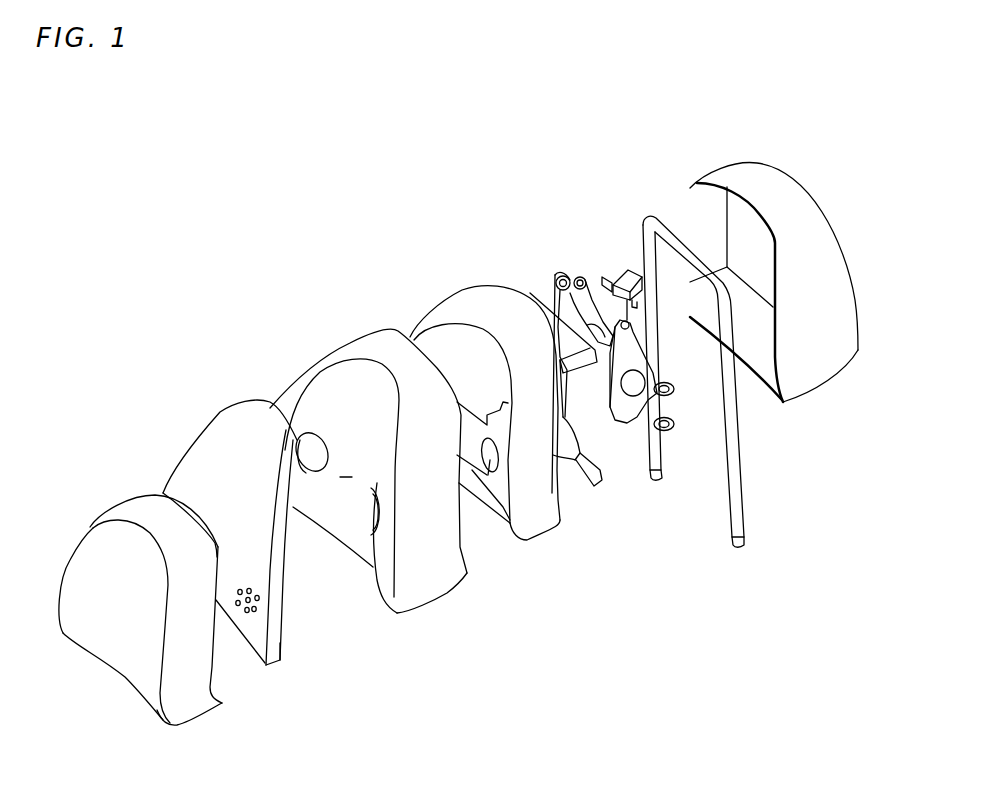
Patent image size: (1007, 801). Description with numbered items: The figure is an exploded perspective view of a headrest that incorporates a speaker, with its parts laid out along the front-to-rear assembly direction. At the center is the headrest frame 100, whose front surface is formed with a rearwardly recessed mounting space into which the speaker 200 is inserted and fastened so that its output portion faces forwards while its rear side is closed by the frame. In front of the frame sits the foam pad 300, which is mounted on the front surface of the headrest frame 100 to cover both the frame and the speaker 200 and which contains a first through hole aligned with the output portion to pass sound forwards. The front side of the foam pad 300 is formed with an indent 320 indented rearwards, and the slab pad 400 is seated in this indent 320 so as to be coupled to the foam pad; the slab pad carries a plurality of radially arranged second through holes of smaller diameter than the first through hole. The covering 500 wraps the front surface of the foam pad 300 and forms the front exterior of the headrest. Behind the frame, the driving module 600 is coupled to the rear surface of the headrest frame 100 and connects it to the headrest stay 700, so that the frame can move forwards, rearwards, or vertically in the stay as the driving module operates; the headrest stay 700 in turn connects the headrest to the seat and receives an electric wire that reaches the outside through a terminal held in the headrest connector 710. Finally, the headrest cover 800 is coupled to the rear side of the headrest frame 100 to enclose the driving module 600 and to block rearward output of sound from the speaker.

The headrest frame 100 is at (462, 302).
The speaker 200 is at (487, 470).
The foam pad 300 is at (327, 336).
The indent 320 is at (346, 478).
The slab pad 400 is at (240, 422).
The covering 500 is at (97, 538).
The driving module 600 is at (558, 256).
The headrest stay 700 is at (648, 215).
The headrest connector 710 is at (736, 562).
The headrest cover 800 is at (745, 183).